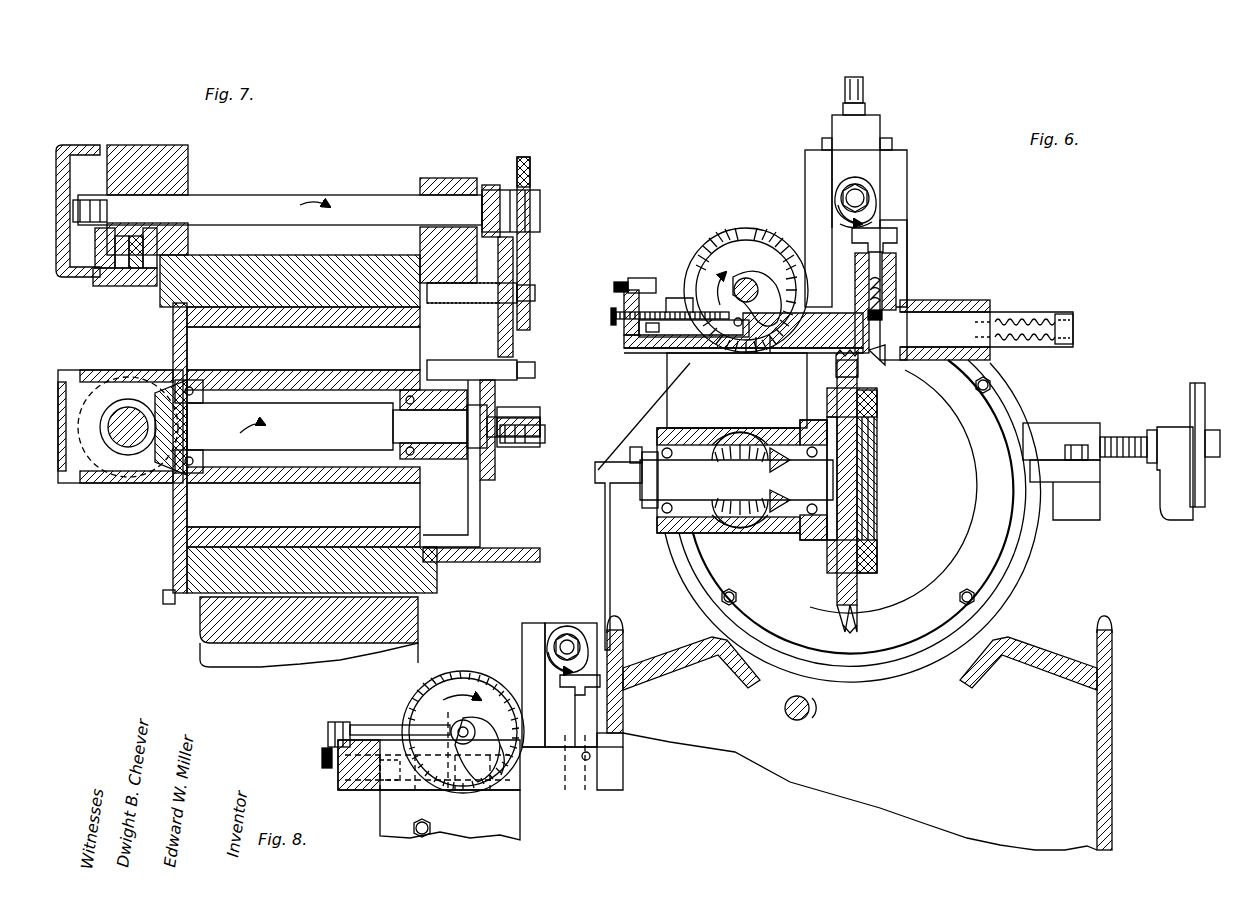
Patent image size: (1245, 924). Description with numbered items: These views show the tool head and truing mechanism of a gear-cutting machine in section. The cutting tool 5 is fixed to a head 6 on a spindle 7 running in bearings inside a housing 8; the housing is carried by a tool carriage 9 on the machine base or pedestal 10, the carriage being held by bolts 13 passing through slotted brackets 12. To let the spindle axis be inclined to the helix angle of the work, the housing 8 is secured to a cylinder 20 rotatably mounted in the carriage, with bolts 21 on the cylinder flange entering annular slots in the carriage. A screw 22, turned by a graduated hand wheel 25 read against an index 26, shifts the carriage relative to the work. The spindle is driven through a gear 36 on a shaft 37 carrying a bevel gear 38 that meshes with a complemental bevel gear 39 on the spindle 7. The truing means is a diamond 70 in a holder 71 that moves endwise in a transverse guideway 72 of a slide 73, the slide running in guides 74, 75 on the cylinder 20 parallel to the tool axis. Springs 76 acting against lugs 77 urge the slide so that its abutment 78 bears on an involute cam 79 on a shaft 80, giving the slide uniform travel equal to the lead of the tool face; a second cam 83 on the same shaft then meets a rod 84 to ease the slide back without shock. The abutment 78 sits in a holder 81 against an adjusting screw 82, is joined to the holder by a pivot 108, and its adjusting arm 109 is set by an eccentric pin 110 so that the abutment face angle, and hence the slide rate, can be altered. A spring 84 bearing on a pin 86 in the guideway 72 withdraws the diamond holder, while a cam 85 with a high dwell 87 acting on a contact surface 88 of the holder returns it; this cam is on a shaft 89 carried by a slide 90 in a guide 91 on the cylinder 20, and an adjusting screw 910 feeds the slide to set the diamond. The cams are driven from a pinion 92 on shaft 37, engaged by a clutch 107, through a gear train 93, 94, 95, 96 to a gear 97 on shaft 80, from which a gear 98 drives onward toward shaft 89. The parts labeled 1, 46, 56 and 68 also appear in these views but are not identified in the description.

In FIG. 6, the pointer / index 1 is at (856, 643).
In FIG. 6, the tool 5 is at (858, 382).
In FIG. 6, the head 6 is at (865, 452).
In FIG. 7, the spindle 7 is at (126, 432).
In FIG. 6, the spindle 7 is at (747, 195).
In FIG. 7, the housing 8 is at (95, 370).
In FIG. 6, the housing 8 is at (725, 432).
In FIG. 7, the tool carriage 9 is at (298, 283).
In FIG. 6, the tool carriage 9 is at (1020, 408).
In FIG. 7, the machine base or pedestal 10 is at (402, 627).
In FIG. 6, the machine base or pedestal 10 is at (1088, 600).
In FIG. 6, the brackets 12 is at (612, 462).
In FIG. 6, the bolts 13 is at (645, 437).
In FIG. 7, the cylinder 20 is at (245, 536).
In FIG. 6, the cylinder 20 is at (980, 440).
In FIG. 6, the bolts 21 is at (985, 393).
In FIG. 6, the screw 22 is at (1123, 433).
In FIG. 6, the graduated hand wheel 25 is at (1195, 383).
In FIG. 6, the index 26 is at (1182, 400).
In FIG. 7, the gear 36 is at (170, 447).
In FIG. 7, the shaft 37 is at (315, 428).
In FIG. 6, the bevel gear 38 is at (752, 445).
In FIG. 6, the complemental bevel gear 39 is at (785, 440).
In FIG. 6, the pin 46 is at (795, 712).
In FIG. 7, the bearing nut 56 is at (445, 455).
In FIG. 7, the plate 68 is at (515, 548).
In FIG. 6, the diamond 70 is at (862, 356).
In FIG. 8, the diamond 70 is at (578, 792).
In FIG. 6, the holder 71 is at (884, 358).
In FIG. 8, the holder 71 is at (573, 690).
In FIG. 6, the transverse guideway 72 is at (897, 262).
In FIG. 8, the transverse guideway 72 is at (600, 741).
In FIG. 7, the slide 73 is at (145, 268).
In FIG. 6, the slide 73 is at (940, 302).
In FIG. 8, the slide 73 is at (614, 778).
In FIG. 6, the guide 74 is at (978, 300).
In FIG. 7, the guide 75 is at (147, 330).
In FIG. 6, the guide 75 is at (672, 348).
In FIG. 8, the guide 75 is at (500, 797).
In FIG. 6, the springs 76 is at (1025, 316).
In FIG. 6, the lugs 77 is at (1062, 314).
In FIG. 6, the abutment 78 is at (766, 353).
In FIG. 7, the cam 79 is at (115, 243).
In FIG. 6, the cam 79 is at (766, 306).
In FIG. 8, the cam 79 is at (480, 790).
In FIG. 7, the shaft 80 is at (320, 208).
In FIG. 6, the shaft 80 is at (740, 275).
In FIG. 8, the shaft 80 is at (456, 728).
In FIG. 7, the holder 81 is at (140, 255).
In FIG. 6, the holder 81 is at (670, 298).
In FIG. 6, the adjusting screw 82 is at (612, 322).
In FIG. 8, the adjusting screw 82 is at (322, 758).
In FIG. 7, the second cam 83 is at (93, 252).
In FIG. 8, the second cam 83 is at (520, 765).
In FIG. 6, the rod 84 is at (643, 280).
In FIG. 8, the rod 84 is at (365, 727).
In FIG. 6, the cam 85 is at (836, 205).
In FIG. 8, the cam 85 is at (546, 660).
In FIG. 6, the pin or bar 86 is at (882, 318).
In FIG. 8, the pin or bar 86 is at (592, 757).
In FIG. 6, the high dwell 87 is at (840, 224).
In FIG. 6, the transverse contact surface 88 is at (893, 233).
In FIG. 8, the transverse contact surface 88 is at (592, 675).
In FIG. 6, the shaft 89 is at (856, 188).
In FIG. 8, the shaft 89 is at (565, 636).
In FIG. 6, the slide 90 is at (848, 150).
In FIG. 8, the slide 90 is at (580, 625).
In FIG. 6, the guide 91 is at (818, 168).
In FIG. 8, the guide 91 is at (532, 634).
In FIG. 7, the pinion 92 is at (487, 449).
In FIG. 7, the gear 93 is at (495, 395).
In FIG. 7, the gear 94 is at (522, 368).
In FIG. 7, the gear 95 is at (505, 347).
In FIG. 7, the gear 96 is at (535, 313).
In FIG. 7, the gear 97 is at (528, 252).
In FIG. 7, the gear 98 is at (492, 190).
In FIG. 7, the clutch 107 is at (525, 415).
In FIG. 6, the pivot 108 is at (737, 327).
In FIG. 8, the pivot 108 is at (432, 800).
In FIG. 7, the adjusting arm 109 is at (128, 262).
In FIG. 6, the adjusting arm 109 is at (660, 332).
In FIG. 8, the adjusting arm 109 is at (392, 790).
In FIG. 6, the eccentric pin 110 is at (645, 340).
In FIG. 8, the eccentric pin 110 is at (365, 782).
In FIG. 6, the adjusting screw 910 is at (864, 100).